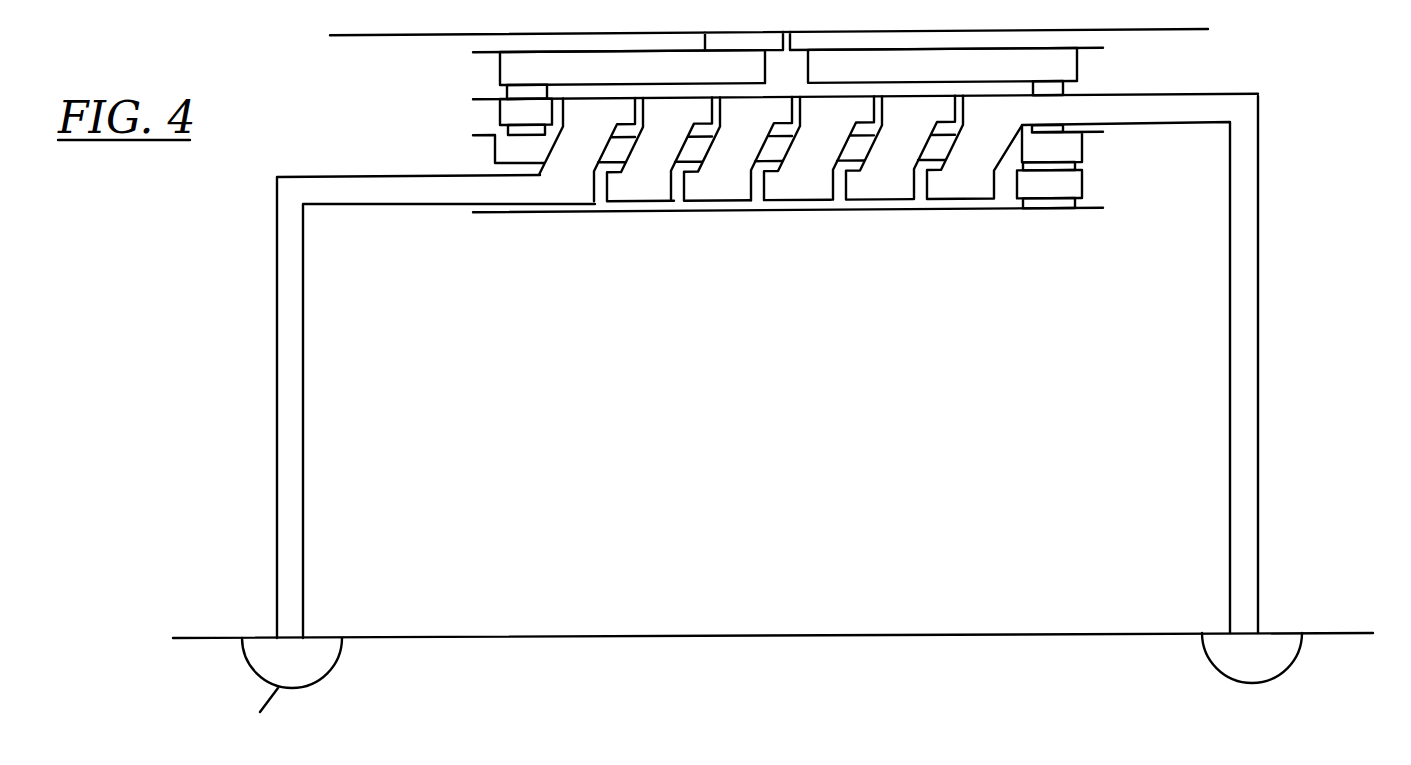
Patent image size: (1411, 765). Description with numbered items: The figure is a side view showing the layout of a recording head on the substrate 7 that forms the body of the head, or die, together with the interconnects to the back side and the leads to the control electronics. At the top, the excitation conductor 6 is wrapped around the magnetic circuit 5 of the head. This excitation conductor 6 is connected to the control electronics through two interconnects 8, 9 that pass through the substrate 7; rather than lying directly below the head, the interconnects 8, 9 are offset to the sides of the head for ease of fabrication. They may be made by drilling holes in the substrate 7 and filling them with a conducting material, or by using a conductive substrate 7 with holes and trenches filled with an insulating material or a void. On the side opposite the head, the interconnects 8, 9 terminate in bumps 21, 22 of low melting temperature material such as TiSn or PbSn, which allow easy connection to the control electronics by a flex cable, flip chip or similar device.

The magnetic circuit 5 is at (794, 213).
The excitation conductor 6 is at (970, 180).
The substrate 7 is at (756, 367).
The interconnect 8 is at (278, 580).
The interconnect 9 is at (1259, 538).
The bump 21 is at (305, 652).
The bump 22 is at (1247, 642).